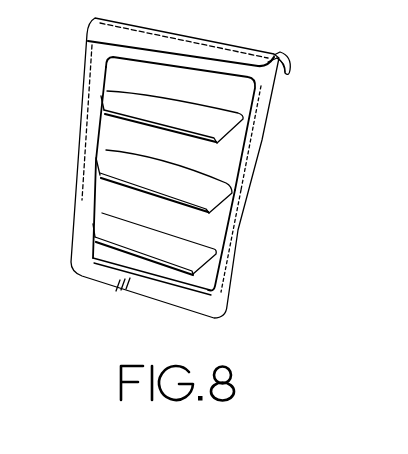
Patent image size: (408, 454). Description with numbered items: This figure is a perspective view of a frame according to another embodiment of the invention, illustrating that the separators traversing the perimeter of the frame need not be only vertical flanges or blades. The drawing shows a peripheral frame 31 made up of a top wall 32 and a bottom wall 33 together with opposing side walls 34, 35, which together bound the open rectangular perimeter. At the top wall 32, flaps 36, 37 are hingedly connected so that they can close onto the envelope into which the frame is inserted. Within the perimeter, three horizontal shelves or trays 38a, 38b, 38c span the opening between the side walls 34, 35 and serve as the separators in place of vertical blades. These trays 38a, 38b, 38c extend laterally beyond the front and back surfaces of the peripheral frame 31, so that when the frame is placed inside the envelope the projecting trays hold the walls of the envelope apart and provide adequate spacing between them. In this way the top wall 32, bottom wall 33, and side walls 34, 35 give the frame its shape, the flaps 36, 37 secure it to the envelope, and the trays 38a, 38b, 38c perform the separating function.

The peripheral frame 31 is at (245, 165).
The top wall 32 is at (268, 78).
The bottom wall 33 is at (103, 276).
The side wall 34 is at (248, 231).
The side wall 35 is at (86, 129).
The flap 36 is at (202, 43).
The flap 37 is at (287, 54).
The horizontal shelf or tray 38a is at (204, 123).
The horizontal shelf or tray 38b is at (210, 189).
The horizontal shelf or tray 38c is at (204, 258).